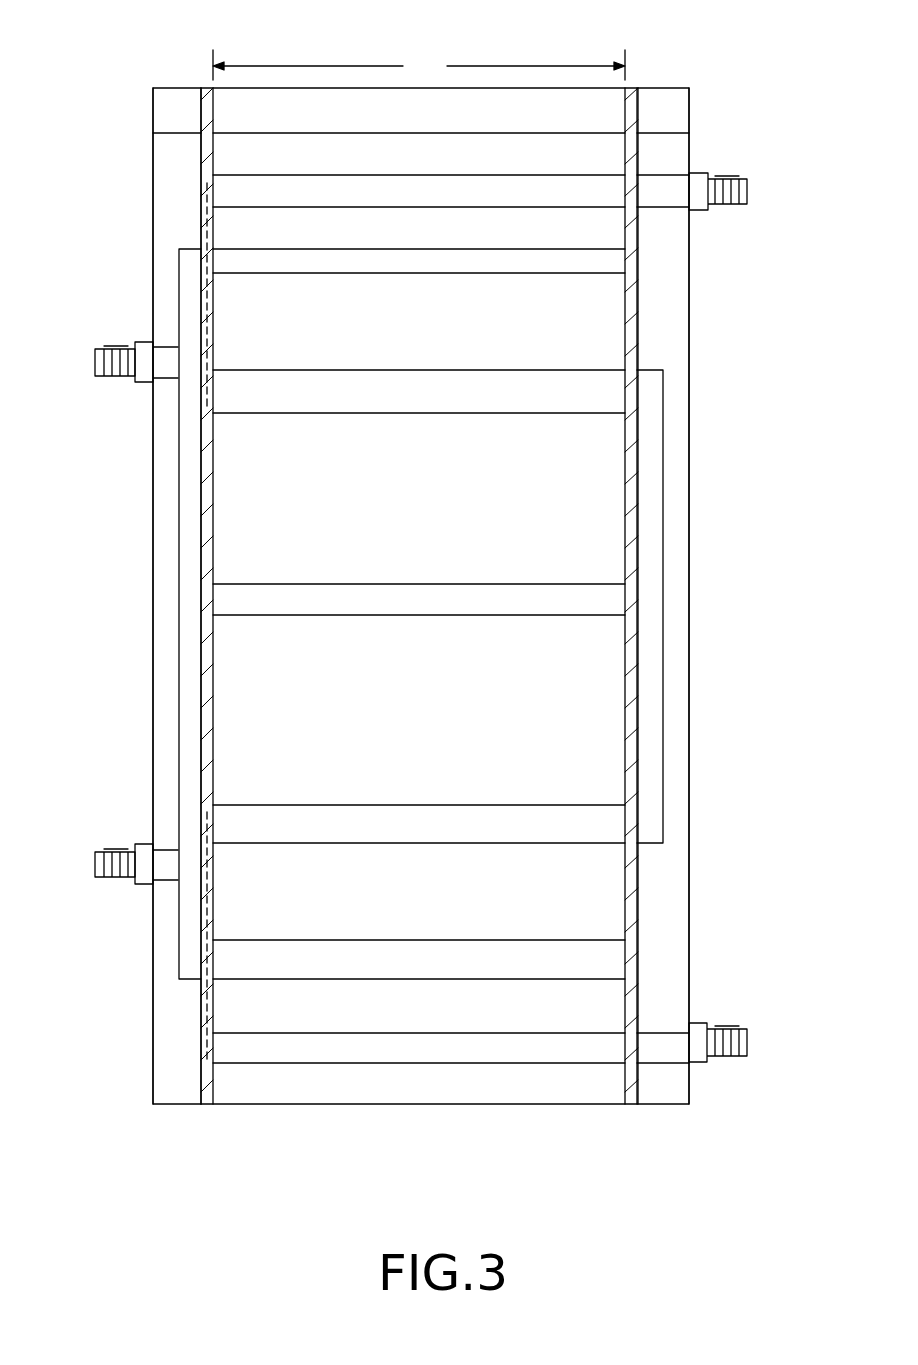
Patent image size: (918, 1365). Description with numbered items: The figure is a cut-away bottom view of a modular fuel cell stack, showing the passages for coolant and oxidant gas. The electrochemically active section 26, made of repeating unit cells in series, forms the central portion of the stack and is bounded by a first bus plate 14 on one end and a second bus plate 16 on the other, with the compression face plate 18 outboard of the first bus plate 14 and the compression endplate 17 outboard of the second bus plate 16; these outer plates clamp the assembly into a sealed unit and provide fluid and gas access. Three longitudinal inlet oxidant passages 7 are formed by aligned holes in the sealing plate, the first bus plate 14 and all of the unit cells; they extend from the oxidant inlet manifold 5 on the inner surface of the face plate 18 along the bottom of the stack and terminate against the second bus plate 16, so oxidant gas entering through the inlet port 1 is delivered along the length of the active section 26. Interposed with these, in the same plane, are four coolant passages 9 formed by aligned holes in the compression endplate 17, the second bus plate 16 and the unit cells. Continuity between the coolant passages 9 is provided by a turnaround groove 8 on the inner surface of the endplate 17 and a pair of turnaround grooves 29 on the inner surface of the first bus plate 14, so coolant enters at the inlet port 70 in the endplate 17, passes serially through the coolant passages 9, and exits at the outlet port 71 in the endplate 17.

The inlet port 1 is at (100, 375).
The oxidant inlet manifold 5 is at (178, 732).
The inlet oxidant passages 7 is at (435, 262).
The turnaround groove 8 is at (663, 702).
The coolant passages 9 is at (435, 192).
The first bus plate 14 is at (212, 1105).
The second bus plate 16 is at (628, 1104).
The compression endplate 17 is at (663, 88).
The compression face plate 18 is at (174, 88).
The electrochemically active section 26 is at (419, 65).
The turnaround grooves 29 is at (213, 345).
The inlet port 70 is at (732, 1022).
The outlet port 71 is at (725, 207).